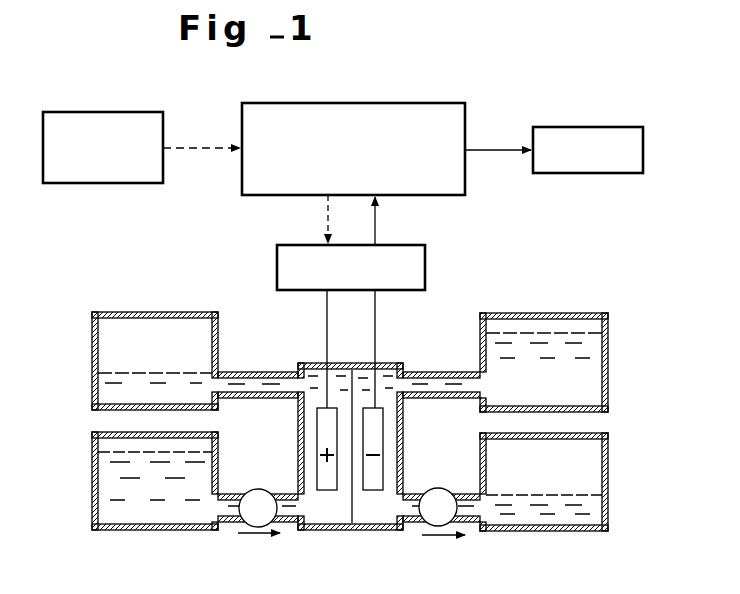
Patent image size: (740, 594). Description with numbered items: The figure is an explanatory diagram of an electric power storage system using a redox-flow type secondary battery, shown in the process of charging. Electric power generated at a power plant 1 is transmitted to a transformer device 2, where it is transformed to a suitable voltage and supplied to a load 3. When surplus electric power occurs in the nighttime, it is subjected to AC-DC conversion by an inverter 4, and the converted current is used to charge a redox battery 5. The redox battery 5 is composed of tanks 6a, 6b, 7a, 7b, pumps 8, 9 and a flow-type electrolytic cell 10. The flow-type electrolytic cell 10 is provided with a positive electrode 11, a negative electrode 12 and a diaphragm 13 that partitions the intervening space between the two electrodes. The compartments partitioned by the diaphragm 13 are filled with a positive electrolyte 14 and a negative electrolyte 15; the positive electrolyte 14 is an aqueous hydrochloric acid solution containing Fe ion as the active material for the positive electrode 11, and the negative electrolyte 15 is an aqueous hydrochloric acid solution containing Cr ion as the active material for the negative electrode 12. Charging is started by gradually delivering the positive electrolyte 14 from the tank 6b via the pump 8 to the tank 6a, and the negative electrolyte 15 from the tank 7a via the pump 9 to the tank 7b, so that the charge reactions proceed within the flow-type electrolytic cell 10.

The power plant 1 is at (94, 112).
The transformer device 2 is at (403, 104).
The load 3 is at (611, 128).
The inverter 4 is at (277, 258).
The redox battery 5 is at (314, 577).
The tank 6a is at (92, 340).
The tank 6b is at (92, 498).
The tank 7a is at (608, 382).
The tank 7b is at (608, 462).
The pump 8 is at (252, 489).
The pump 9 is at (443, 488).
The flow-type electrolytic cell 10 is at (387, 364).
The positive electrode 11 is at (317, 435).
The negative electrode 12 is at (383, 438).
The diaphragm 13 is at (353, 498).
The positive electrolyte 14 is at (118, 465).
The negative electrolyte 15 is at (572, 347).